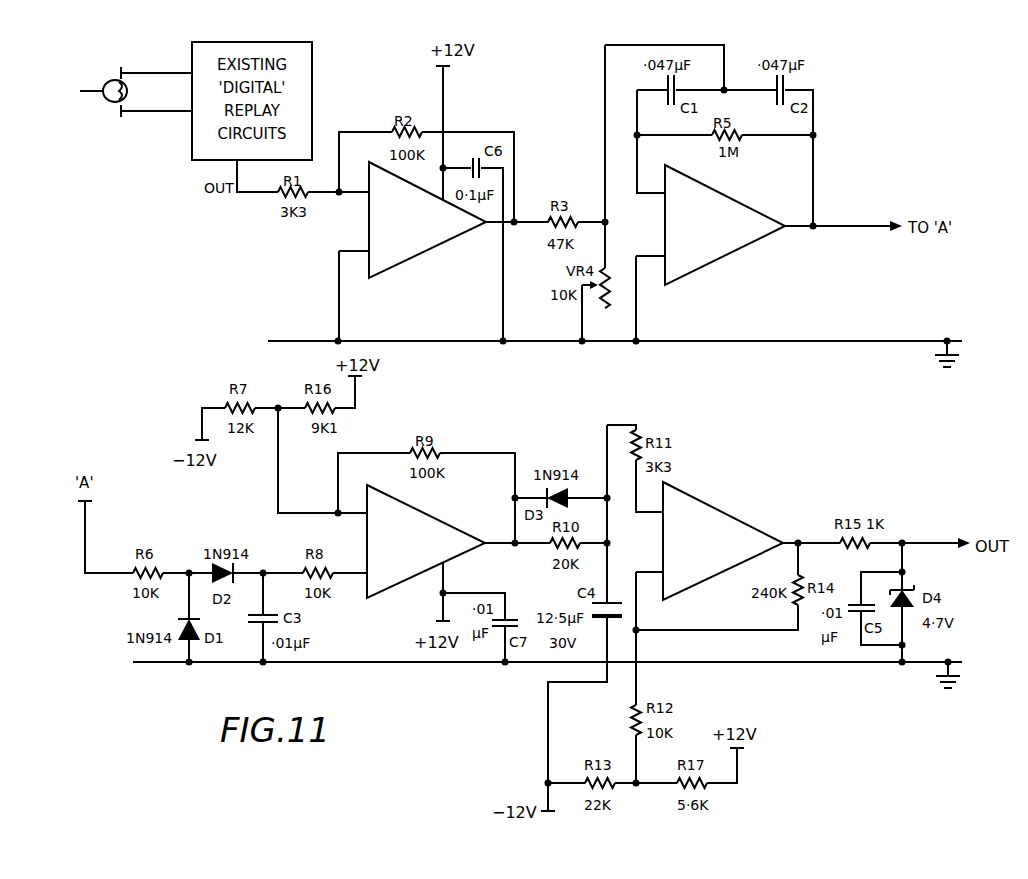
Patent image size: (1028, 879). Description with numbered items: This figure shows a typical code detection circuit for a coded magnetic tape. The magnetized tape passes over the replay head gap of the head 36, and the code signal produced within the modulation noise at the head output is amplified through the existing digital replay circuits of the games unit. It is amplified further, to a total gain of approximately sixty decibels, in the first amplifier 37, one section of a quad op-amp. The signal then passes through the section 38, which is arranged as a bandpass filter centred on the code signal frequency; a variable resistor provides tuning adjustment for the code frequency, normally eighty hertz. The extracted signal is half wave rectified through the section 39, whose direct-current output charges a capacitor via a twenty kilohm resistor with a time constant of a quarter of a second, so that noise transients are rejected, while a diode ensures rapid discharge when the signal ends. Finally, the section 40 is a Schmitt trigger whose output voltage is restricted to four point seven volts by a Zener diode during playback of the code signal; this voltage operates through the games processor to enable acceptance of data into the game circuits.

The head 36 is at (103, 80).
The first amplifier 37 is at (428, 254).
The bandpass filter 38 is at (728, 257).
The half wave rectifier section 39 is at (402, 586).
The Schmitt trigger 40 is at (735, 515).